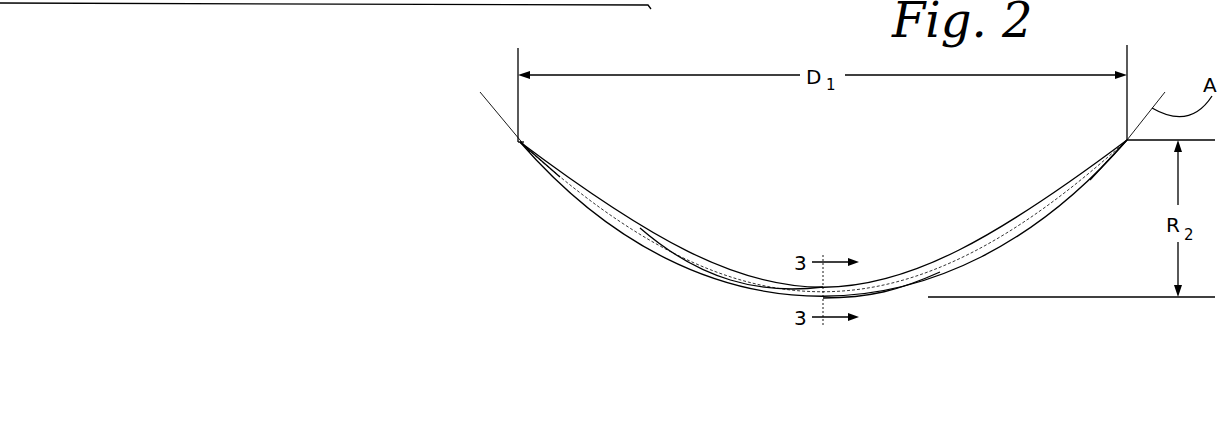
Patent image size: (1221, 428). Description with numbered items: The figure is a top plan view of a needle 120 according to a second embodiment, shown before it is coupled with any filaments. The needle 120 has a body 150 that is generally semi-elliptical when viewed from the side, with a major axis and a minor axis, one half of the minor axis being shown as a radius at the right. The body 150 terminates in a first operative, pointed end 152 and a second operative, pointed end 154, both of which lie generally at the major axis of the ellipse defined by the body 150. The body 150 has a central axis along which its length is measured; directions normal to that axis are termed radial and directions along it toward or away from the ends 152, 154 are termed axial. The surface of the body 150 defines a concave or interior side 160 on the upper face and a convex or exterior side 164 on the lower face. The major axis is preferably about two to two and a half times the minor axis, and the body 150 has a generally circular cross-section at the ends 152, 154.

The needle 120 is at (529, 126).
The needle body 150 is at (918, 267).
The first operative pointed end 152 is at (509, 151).
The second operative pointed end 154 is at (1114, 135).
The concave interior side 160 is at (700, 256).
The convex exterior side 164 is at (903, 290).